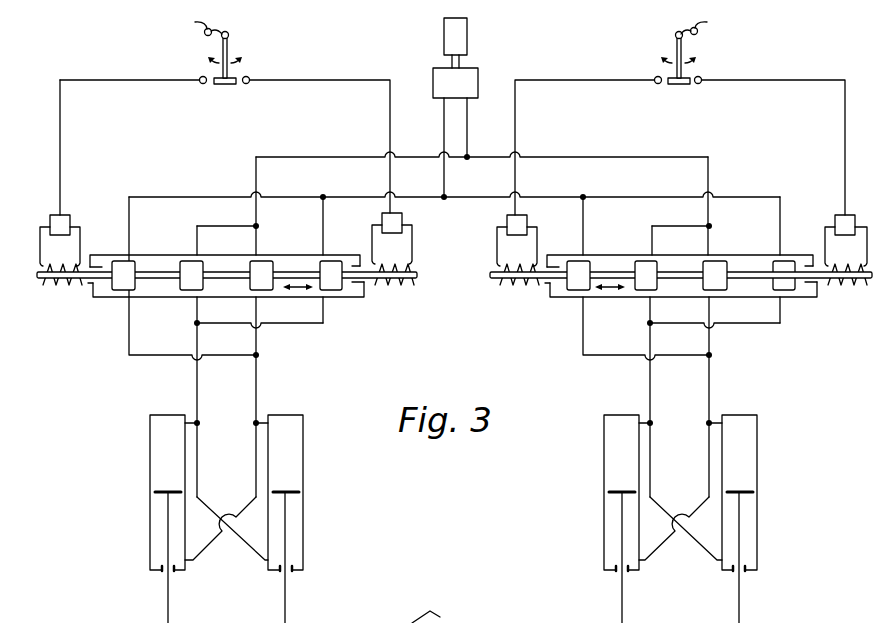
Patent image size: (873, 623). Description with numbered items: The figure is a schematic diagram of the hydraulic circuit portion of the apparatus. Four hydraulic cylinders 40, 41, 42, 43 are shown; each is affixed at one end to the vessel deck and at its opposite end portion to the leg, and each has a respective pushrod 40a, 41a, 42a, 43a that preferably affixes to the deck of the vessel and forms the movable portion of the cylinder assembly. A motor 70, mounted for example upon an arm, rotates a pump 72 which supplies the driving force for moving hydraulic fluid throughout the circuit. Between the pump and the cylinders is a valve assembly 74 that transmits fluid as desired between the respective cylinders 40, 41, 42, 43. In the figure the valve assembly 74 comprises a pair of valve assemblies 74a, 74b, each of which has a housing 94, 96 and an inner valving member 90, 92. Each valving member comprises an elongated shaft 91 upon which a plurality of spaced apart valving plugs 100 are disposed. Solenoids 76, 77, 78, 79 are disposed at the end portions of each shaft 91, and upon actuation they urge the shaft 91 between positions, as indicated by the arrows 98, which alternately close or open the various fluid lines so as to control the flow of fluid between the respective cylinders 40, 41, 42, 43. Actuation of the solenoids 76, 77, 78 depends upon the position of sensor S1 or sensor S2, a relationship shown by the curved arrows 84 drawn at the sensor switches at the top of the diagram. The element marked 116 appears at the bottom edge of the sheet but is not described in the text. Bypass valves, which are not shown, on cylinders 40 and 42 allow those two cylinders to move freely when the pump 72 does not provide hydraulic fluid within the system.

The hydraulic cylinder 40 is at (150, 462).
The pushrod 40a is at (168, 594).
The hydraulic cylinder 41 is at (604, 472).
The pushrod 41a is at (622, 594).
The hydraulic cylinder 42 is at (303, 461).
The pushrod 42a is at (285, 594).
The hydraulic cylinder 43 is at (757, 471).
The pushrod 43a is at (739, 596).
The motor 70 is at (458, 37).
The pump 72 is at (466, 80).
The valve assembly 74 is at (405, 63).
The valve assembly 74a is at (340, 298).
The valve assembly 74b is at (558, 298).
The solenoid 76 is at (48, 284).
The solenoid 77 is at (394, 283).
The solenoid 78 is at (513, 283).
The solenoid 79 is at (847, 287).
The curved arrows 84 is at (241, 62).
The inner valving member 90 is at (157, 268).
The elongated shaft 91 is at (100, 266).
The inner valving member 92 is at (614, 270).
The housing 94 is at (100, 299).
The housing 96 is at (748, 256).
The arrows 98 is at (296, 291).
The valving plugs 100 is at (318, 266).
The frame member 116 is at (384, 617).
The sensor S1 is at (214, 61).
The sensor S2 is at (689, 63).